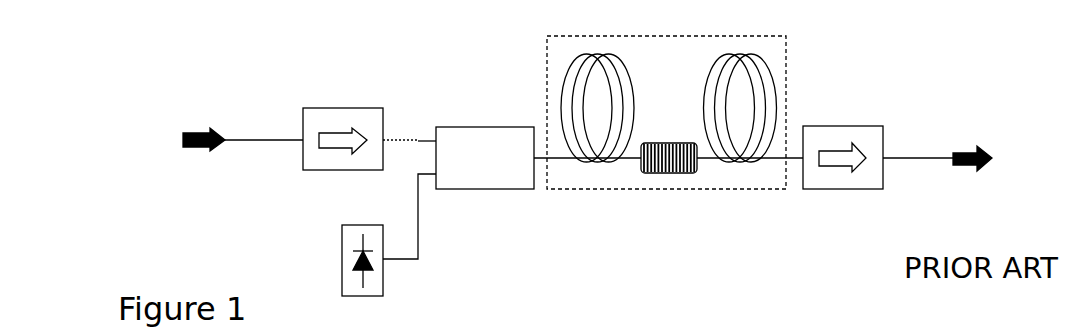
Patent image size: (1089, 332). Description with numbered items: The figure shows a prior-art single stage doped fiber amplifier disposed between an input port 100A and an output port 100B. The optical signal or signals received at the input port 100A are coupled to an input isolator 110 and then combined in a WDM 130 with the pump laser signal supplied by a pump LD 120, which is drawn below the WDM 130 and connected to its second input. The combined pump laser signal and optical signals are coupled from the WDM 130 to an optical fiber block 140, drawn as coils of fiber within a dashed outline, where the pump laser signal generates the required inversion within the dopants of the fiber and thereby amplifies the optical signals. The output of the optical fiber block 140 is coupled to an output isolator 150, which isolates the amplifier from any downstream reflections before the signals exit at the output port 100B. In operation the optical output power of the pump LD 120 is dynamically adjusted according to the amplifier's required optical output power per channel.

The input port 100A is at (167, 139).
The input isolator 110 is at (343, 125).
The pump LD 120 is at (340, 260).
The WDM 130 is at (485, 145).
The optical fiber block 140 is at (666, 126).
The output isolator 150 is at (843, 145).
The output port 100B is at (1001, 159).